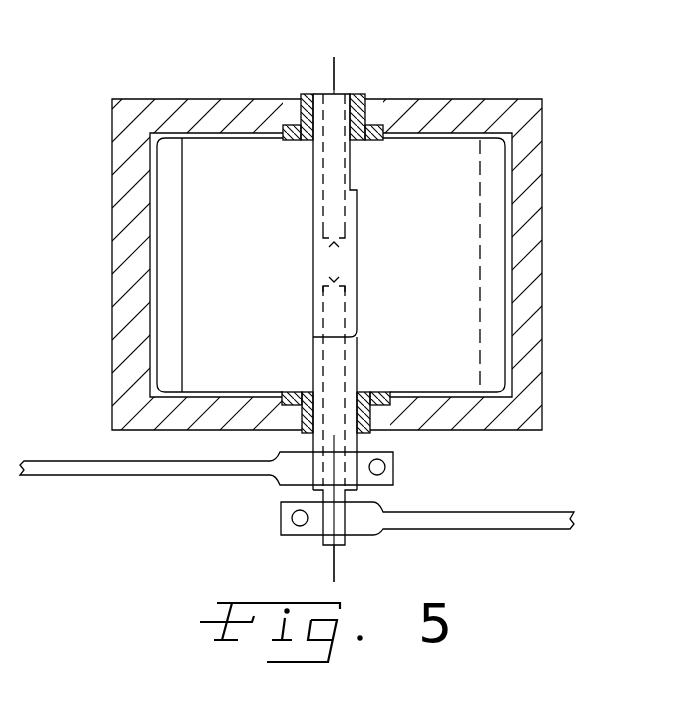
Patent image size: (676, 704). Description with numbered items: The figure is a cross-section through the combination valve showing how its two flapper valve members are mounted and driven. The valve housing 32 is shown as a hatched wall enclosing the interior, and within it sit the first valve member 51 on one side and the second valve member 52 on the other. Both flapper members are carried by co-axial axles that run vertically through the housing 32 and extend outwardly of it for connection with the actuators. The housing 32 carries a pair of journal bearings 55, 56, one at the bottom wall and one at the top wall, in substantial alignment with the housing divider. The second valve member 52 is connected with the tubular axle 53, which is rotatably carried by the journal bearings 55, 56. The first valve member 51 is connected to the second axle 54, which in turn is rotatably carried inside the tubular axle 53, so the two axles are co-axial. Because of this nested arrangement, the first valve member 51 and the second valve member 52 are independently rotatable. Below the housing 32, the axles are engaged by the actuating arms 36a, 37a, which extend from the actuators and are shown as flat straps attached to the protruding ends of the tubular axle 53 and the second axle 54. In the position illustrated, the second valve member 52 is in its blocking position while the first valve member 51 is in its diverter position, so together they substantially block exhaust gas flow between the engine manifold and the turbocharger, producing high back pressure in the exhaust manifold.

The valve housing 32 is at (479, 98).
The first valve member 51 is at (257, 276).
The second valve member 52 is at (434, 276).
The tubular axle 53 is at (348, 94).
The second axle 54 is at (325, 93).
The journal bearing 55 is at (364, 391).
The journal bearing 56 is at (366, 96).
The actuating arm 36a is at (77, 472).
The actuating arm 37a is at (520, 526).